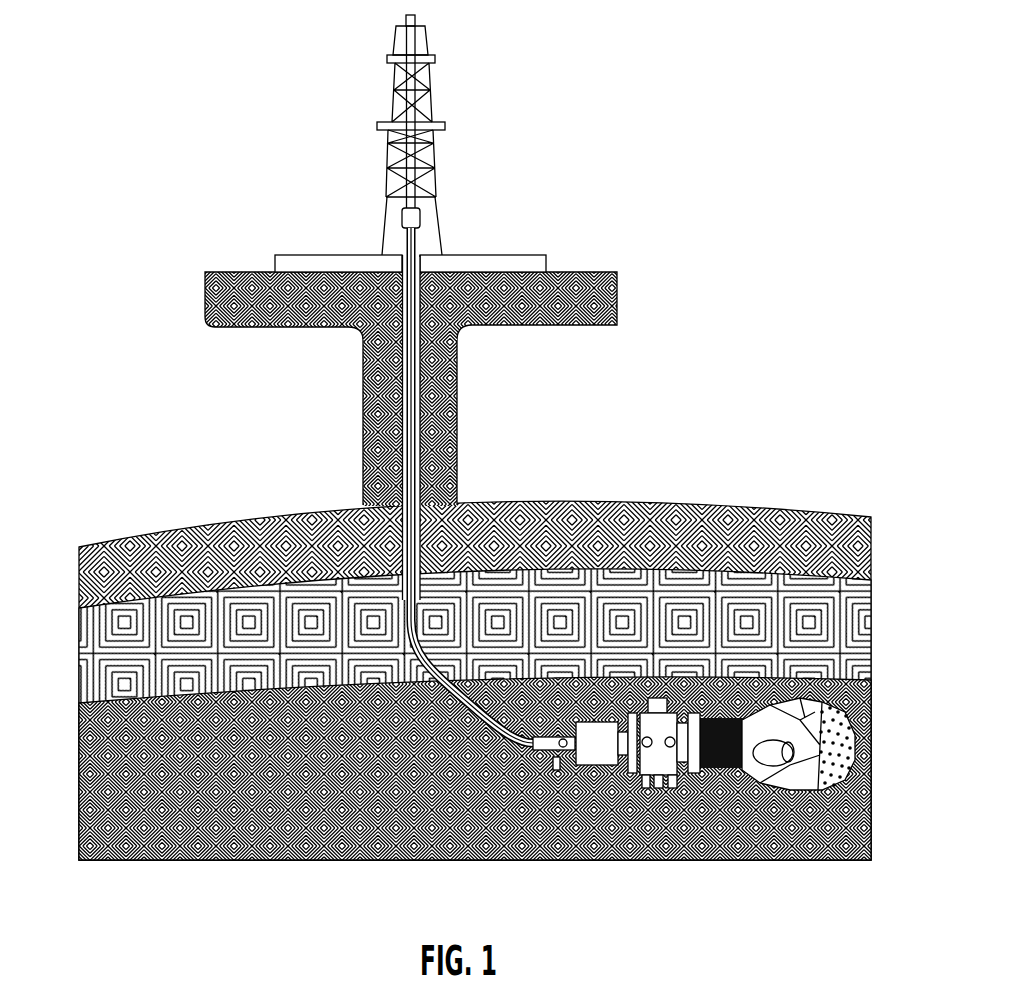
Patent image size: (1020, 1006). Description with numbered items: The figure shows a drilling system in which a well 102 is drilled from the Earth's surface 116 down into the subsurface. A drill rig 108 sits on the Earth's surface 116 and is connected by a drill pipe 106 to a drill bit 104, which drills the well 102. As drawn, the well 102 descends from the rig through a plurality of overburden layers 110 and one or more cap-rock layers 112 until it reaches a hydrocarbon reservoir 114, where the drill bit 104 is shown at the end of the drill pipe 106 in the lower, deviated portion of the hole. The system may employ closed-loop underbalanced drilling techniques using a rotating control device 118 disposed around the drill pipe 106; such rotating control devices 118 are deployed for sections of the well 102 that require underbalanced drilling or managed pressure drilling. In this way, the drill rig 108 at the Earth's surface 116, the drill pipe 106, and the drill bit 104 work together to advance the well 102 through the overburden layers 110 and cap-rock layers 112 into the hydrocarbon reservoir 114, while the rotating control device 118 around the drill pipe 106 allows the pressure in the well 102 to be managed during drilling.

The well 102 is at (400, 436).
The drill bit 104 is at (848, 712).
The drill pipe 106 is at (413, 242).
The drill rig 108 is at (437, 155).
The overburden layers 110 is at (458, 418).
The cap-rock layers 112 is at (96, 630).
The hydrocarbon reservoir 114 is at (97, 757).
The Earth's surface 116 is at (598, 273).
The rotating control device 118 is at (683, 672).